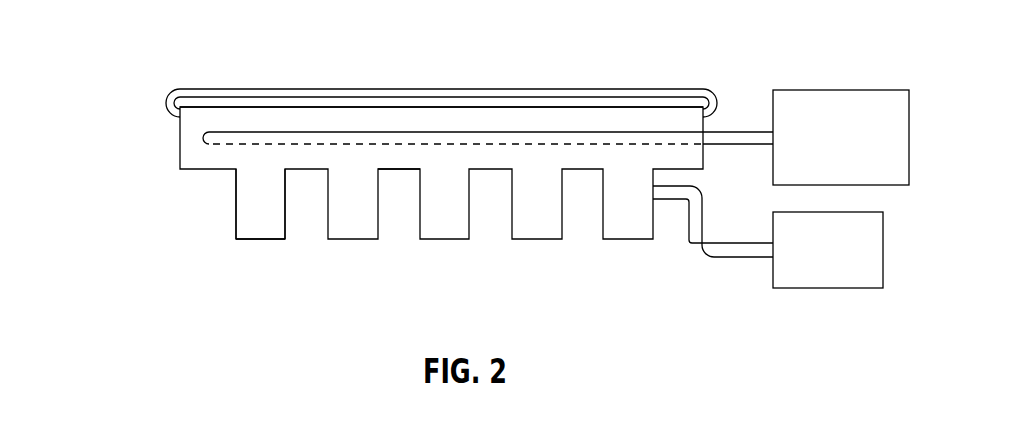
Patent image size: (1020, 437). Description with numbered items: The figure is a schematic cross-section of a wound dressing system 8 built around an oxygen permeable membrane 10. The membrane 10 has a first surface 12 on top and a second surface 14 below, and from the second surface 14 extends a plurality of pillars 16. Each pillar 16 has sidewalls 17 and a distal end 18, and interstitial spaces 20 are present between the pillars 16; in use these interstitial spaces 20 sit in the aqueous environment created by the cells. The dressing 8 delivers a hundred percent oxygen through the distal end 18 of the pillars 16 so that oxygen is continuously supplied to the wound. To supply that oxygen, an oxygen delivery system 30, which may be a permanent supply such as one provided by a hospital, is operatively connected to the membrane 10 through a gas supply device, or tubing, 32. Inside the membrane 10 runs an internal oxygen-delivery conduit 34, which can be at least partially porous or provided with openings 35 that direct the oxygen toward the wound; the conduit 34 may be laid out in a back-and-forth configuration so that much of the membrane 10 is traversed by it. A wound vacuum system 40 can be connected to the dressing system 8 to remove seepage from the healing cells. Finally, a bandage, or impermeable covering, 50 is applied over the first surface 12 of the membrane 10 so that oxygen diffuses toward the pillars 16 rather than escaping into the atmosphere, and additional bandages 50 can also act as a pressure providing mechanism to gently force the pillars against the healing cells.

The wound dressing system 8 is at (95, 133).
The membrane 10 is at (173, 126).
The first surface 12 is at (227, 108).
The second surface 14 is at (200, 172).
The pillars 16 is at (287, 223).
The sidewalls 17 is at (235, 223).
The distal end 18 is at (260, 240).
The interstitial spaces 20 is at (399, 225).
The oxygen delivery system 30 is at (840, 84).
The gas supply device 32 is at (744, 126).
The conduit 34 is at (386, 131).
The openings 35 is at (444, 152).
The wound vacuum system 40 is at (828, 294).
The bandage 50 is at (598, 83).